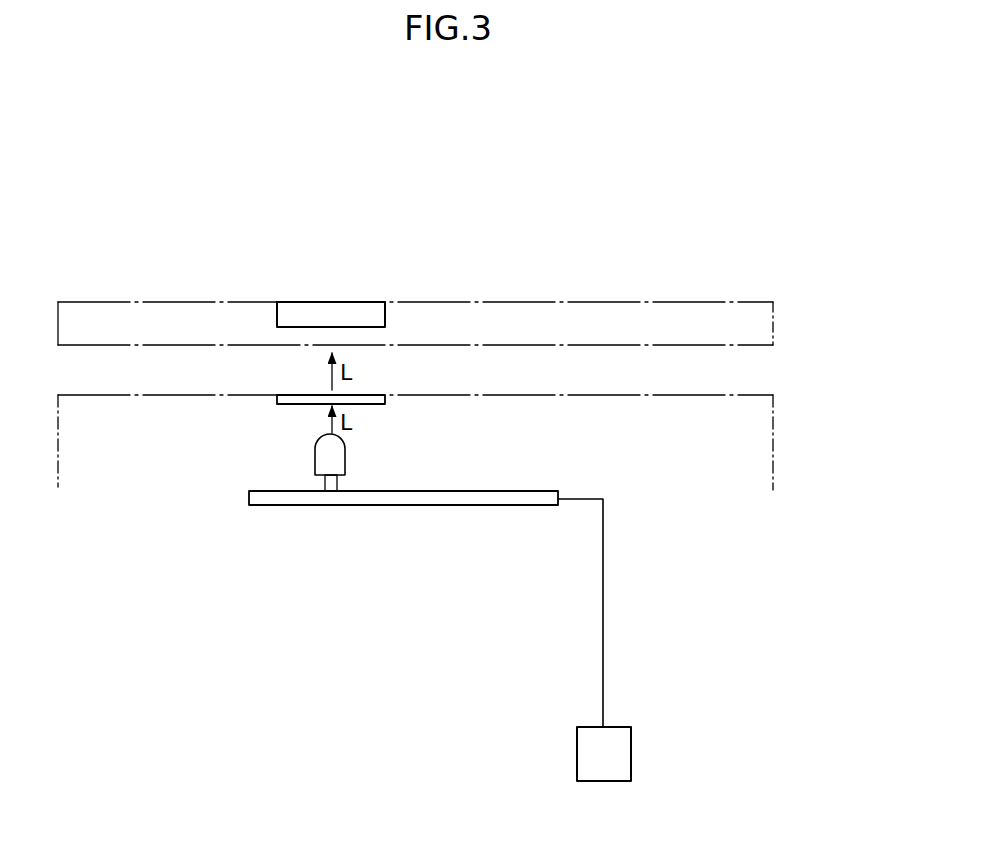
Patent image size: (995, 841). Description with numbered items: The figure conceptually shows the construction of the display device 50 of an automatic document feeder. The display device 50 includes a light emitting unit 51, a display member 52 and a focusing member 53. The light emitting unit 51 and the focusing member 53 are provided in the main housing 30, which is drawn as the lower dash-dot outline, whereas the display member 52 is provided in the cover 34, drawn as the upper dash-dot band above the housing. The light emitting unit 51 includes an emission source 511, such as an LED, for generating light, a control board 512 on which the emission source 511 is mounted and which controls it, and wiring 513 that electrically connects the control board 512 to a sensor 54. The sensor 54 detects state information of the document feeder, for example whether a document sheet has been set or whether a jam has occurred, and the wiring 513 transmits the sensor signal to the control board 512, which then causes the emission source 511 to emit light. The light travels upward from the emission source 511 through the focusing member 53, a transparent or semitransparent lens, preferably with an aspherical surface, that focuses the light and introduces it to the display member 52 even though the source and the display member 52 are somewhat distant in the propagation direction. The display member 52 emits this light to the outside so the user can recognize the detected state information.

The main housing 30 is at (773, 437).
The cover 34 is at (660, 302).
The display device 50 is at (160, 193).
The light emitting unit 51 is at (232, 464).
The display member 52 is at (312, 296).
The focusing member 53 is at (285, 379).
The sensor 54 is at (631, 752).
The emission source 511 is at (345, 455).
The control board 512 is at (450, 507).
The wiring 513 is at (604, 600).